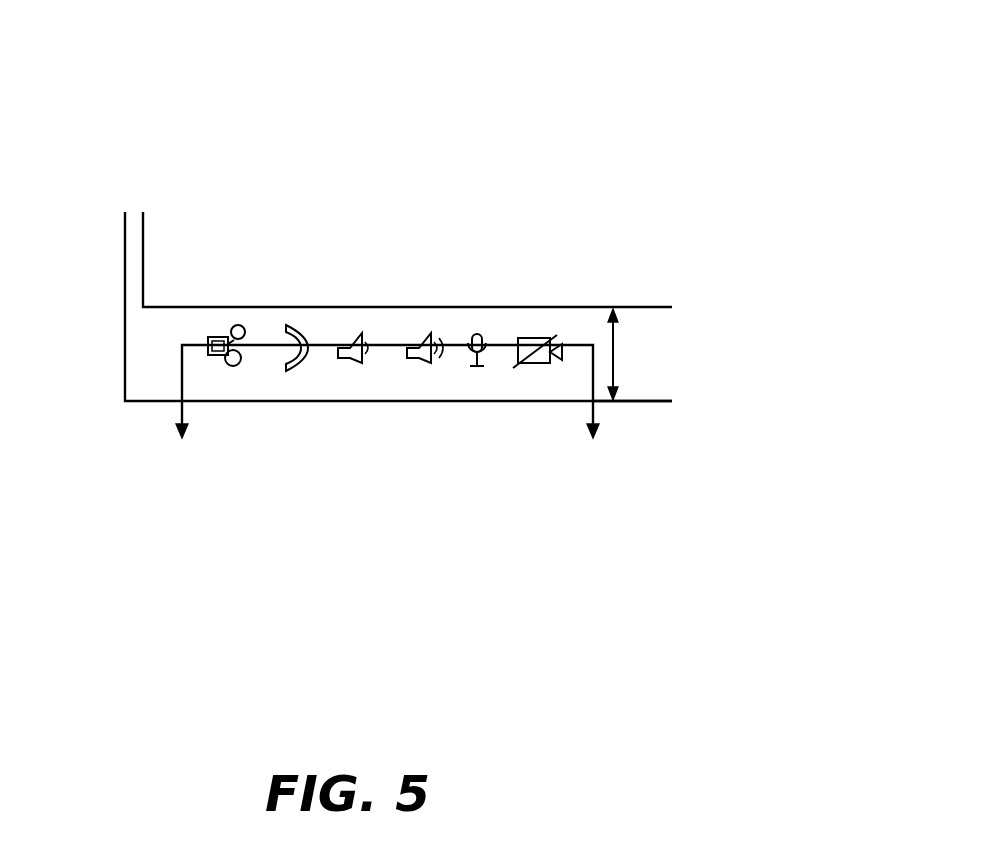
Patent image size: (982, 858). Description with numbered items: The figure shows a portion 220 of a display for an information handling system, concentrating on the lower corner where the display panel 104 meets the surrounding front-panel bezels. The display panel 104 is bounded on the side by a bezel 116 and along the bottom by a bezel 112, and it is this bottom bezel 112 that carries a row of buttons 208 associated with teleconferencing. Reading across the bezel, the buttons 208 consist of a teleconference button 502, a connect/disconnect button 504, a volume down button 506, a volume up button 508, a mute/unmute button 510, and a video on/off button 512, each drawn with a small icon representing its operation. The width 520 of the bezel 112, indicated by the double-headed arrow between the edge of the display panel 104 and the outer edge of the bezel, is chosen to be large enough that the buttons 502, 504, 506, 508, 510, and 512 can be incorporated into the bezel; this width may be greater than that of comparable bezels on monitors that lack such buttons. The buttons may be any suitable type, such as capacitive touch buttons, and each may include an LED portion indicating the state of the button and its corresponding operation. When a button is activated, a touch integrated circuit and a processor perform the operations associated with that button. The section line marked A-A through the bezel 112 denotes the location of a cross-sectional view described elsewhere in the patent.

The display panel 104 is at (632, 288).
The bezel 112 is at (638, 372).
The bezel 116 is at (137, 268).
The buttons 208 is at (382, 372).
The portion of display 220 is at (550, 138).
The teleconference button 502 is at (243, 330).
The connect/disconnect button 504 is at (300, 338).
The volume down button 506 is at (362, 340).
The volume up button 508 is at (425, 340).
The mute/unmute button 510 is at (477, 335).
The video on/off button 512 is at (545, 337).
The width of bezel 520 is at (633, 354).